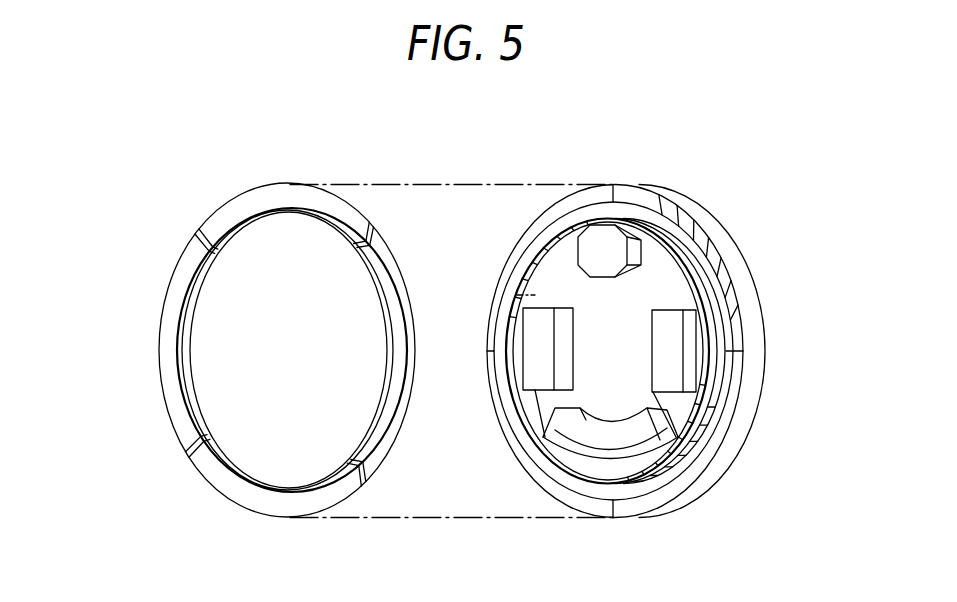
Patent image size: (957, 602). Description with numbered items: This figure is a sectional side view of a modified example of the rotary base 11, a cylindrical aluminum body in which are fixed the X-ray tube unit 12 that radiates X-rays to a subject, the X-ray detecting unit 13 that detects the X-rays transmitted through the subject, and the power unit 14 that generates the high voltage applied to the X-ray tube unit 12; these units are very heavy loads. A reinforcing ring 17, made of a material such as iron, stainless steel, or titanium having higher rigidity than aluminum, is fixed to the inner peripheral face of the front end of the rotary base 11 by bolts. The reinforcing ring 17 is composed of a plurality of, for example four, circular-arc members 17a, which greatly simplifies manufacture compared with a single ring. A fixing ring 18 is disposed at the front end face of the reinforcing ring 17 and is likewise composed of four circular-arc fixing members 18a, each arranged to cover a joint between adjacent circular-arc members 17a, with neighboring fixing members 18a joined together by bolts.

The rotary base 11 is at (733, 258).
The X-ray tube unit 12 is at (598, 252).
The X-ray detecting unit 13 is at (562, 448).
The power unit 14 is at (535, 355).
The reinforcing ring 17 is at (656, 333).
The circular-arc member 17a is at (507, 260).
The fixing ring 18 is at (261, 352).
The circular-arc fixing member 18a is at (289, 192).